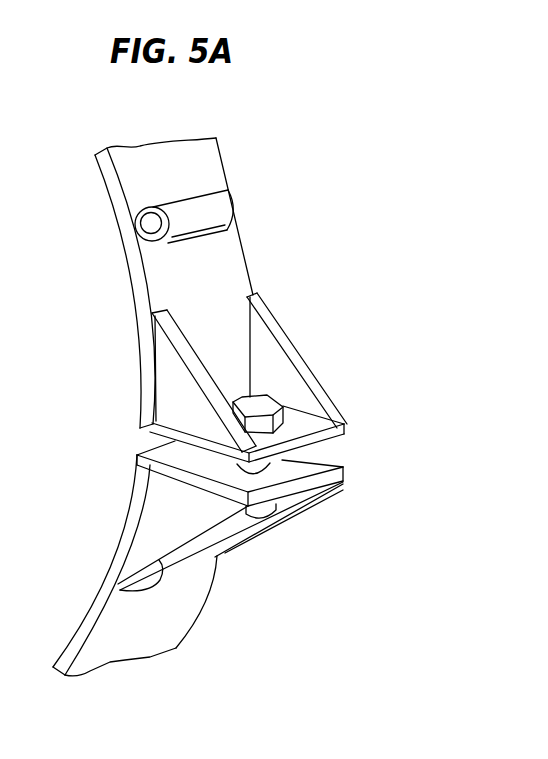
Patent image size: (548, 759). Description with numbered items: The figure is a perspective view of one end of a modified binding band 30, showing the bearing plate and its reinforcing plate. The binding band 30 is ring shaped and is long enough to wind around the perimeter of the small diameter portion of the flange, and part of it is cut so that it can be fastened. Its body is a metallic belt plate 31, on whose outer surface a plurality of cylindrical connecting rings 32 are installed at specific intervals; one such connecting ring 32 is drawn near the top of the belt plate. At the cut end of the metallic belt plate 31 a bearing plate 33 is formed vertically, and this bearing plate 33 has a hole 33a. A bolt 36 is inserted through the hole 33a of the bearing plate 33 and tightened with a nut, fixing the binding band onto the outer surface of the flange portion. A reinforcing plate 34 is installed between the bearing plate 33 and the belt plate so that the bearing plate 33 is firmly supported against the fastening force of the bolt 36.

The binding band 30 is at (289, 310).
The metallic belt plate 31 is at (133, 289).
The connecting ring 32 is at (197, 202).
The bearing plate 33 is at (323, 462).
The hole 33a is at (328, 465).
The reinforcing plate 34 is at (312, 376).
The bolt 36 is at (248, 403).